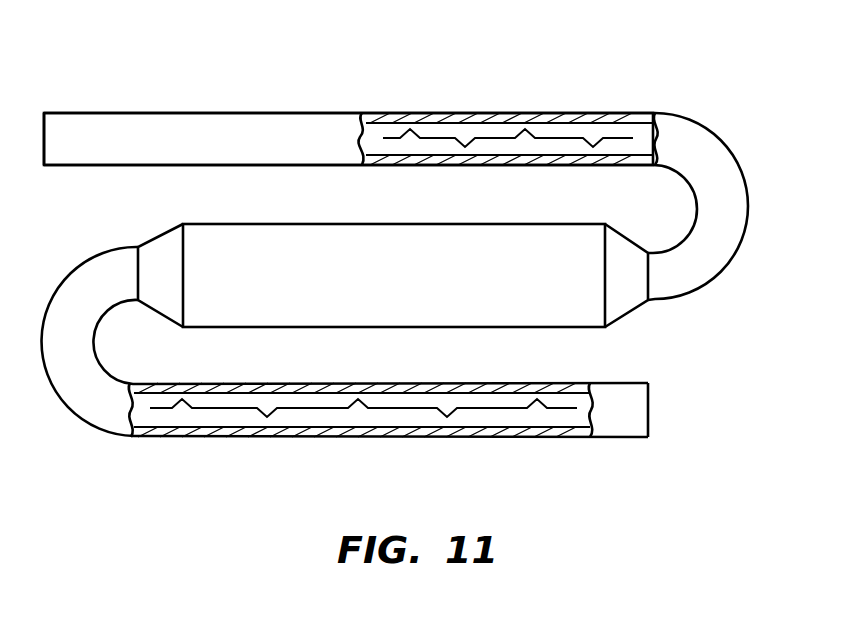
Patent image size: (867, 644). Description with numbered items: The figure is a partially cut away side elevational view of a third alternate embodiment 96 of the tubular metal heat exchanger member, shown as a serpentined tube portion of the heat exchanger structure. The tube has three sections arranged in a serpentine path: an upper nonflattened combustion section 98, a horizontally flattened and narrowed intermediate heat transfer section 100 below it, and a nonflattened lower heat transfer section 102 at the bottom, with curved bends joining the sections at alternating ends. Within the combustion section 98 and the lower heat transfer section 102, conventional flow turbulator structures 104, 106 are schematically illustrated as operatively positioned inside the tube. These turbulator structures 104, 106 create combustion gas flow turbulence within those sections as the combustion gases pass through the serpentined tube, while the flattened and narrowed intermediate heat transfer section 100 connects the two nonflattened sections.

The third alternate embodiment 96 is at (279, 80).
The nonflattened combustion section 98 is at (192, 112).
The horizontally flattened and narrowed intermediate heat transfer section 100 is at (283, 224).
The nonflattened lower heat transfer section 102 is at (263, 383).
The flow turbulator structure 104 is at (491, 140).
The flow turbulator structure 106 is at (403, 408).